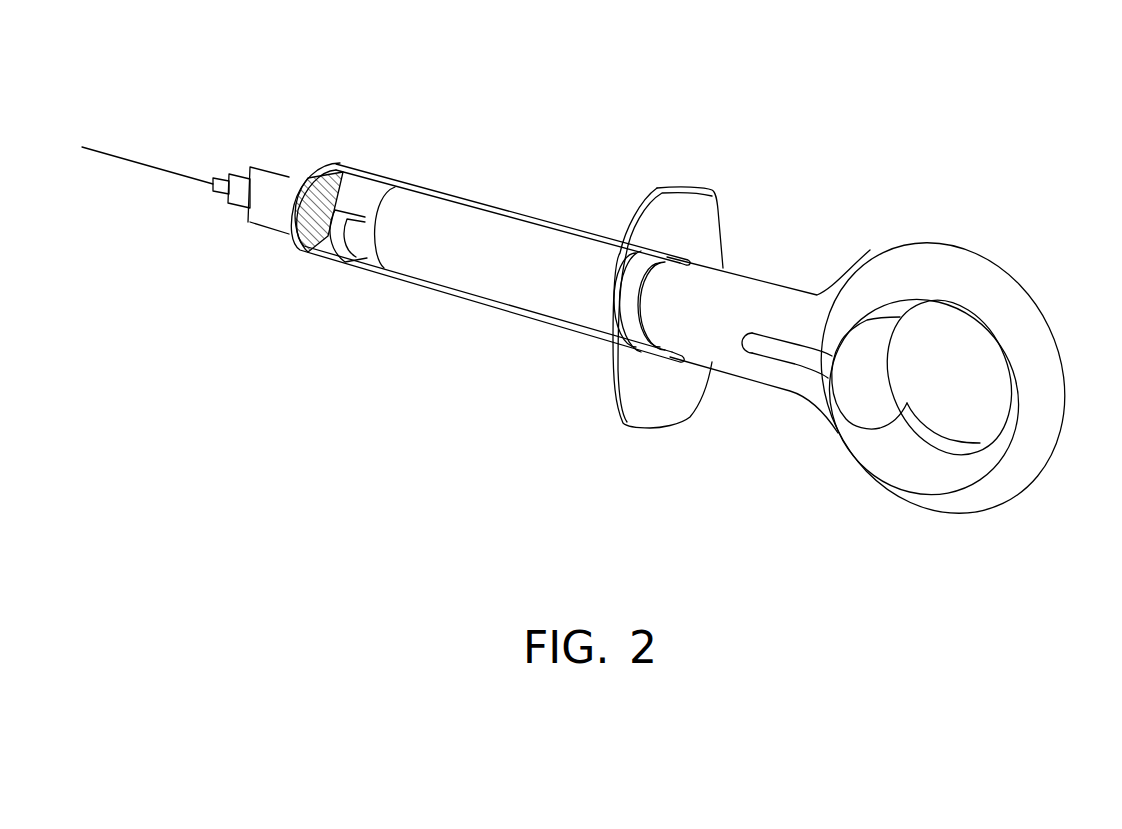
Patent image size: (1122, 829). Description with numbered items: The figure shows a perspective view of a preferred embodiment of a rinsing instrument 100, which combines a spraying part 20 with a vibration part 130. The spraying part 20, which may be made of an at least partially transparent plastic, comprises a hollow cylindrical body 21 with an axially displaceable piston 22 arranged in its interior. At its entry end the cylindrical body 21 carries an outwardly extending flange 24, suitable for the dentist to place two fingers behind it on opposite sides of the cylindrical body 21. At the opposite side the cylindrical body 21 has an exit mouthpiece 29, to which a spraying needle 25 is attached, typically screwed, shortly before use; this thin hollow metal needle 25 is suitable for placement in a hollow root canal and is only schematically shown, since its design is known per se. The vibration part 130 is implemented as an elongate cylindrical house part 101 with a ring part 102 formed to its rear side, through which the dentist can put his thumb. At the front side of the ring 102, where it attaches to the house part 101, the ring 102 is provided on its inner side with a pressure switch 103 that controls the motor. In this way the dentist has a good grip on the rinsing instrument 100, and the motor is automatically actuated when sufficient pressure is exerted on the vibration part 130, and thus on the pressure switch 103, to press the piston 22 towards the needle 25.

The rinsing instrument 100 is at (595, 308).
The spraying part 20 is at (386, 212).
The cylindrical body 21 is at (557, 223).
The piston 22 is at (347, 177).
The flange 24 is at (615, 418).
The spraying needle 25 is at (137, 160).
The exit mouthpiece 29 is at (270, 172).
The vibration part 130 is at (826, 345).
The house part 101 is at (722, 353).
The ring part 102 is at (977, 286).
The pressure switch 103 is at (862, 390).